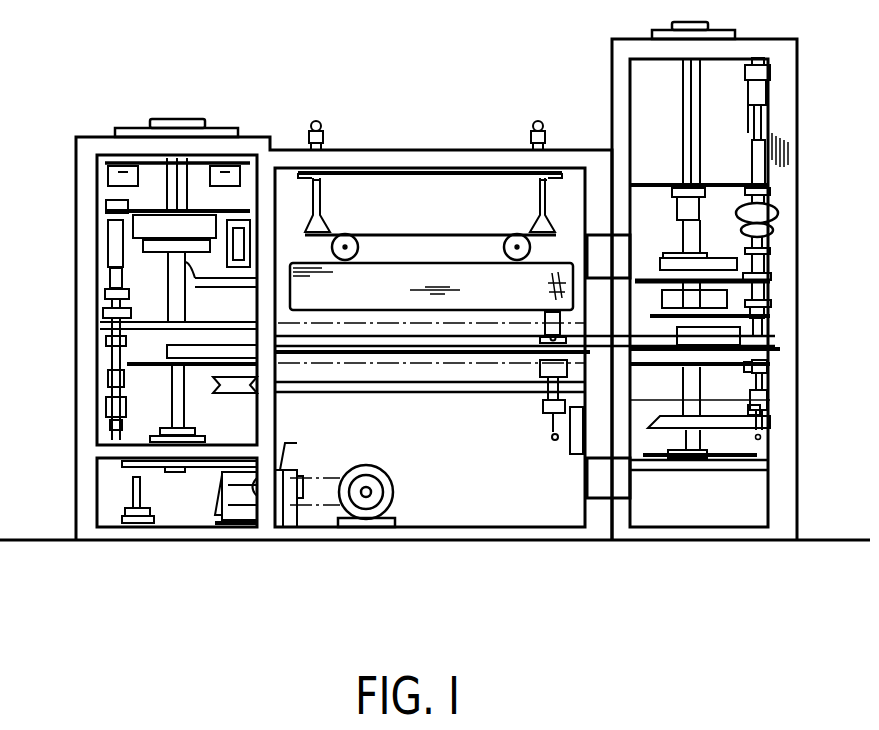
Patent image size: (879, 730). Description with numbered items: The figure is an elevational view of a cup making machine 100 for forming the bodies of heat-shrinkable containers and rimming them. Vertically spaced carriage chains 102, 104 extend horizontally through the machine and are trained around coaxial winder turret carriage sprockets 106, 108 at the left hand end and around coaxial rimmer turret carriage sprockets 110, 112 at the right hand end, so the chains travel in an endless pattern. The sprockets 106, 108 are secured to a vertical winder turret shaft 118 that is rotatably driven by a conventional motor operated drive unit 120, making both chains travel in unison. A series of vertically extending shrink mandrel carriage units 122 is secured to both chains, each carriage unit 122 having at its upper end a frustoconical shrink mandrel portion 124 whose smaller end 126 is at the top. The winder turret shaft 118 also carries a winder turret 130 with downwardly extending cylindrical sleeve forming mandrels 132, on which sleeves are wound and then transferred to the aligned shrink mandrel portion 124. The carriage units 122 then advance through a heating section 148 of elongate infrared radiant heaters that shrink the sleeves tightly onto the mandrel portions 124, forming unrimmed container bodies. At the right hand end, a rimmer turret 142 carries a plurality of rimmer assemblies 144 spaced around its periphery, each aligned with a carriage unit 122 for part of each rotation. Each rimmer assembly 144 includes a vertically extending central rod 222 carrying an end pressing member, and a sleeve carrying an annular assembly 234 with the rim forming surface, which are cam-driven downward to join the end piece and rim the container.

The cup making machine 100 is at (437, 108).
The carriage chain 102 is at (423, 320).
The carriage chain 104 is at (310, 370).
The winder turret carriage sprocket 106 is at (128, 352).
The winder turret carriage sprocket 108 is at (160, 366).
The rimmer turret carriage sprocket 110 is at (745, 330).
The rimmer turret carriage sprocket 112 is at (745, 368).
The winder turret shaft 118 is at (180, 397).
The motor operated drive unit 120 is at (233, 527).
The shrink mandrel carriage unit 122 is at (160, 327).
The shrink mandrel portion 124 is at (108, 283).
The smaller end 126 is at (108, 266).
The winder turret 130 is at (160, 210).
The sleeve forming mandrel 132 is at (108, 245).
The rimmer turret 142 is at (725, 183).
The rimmer assembly 144 is at (784, 186).
The heating section 148 is at (390, 273).
The central rod 222 is at (765, 104).
The annular assembly 234 is at (770, 217).